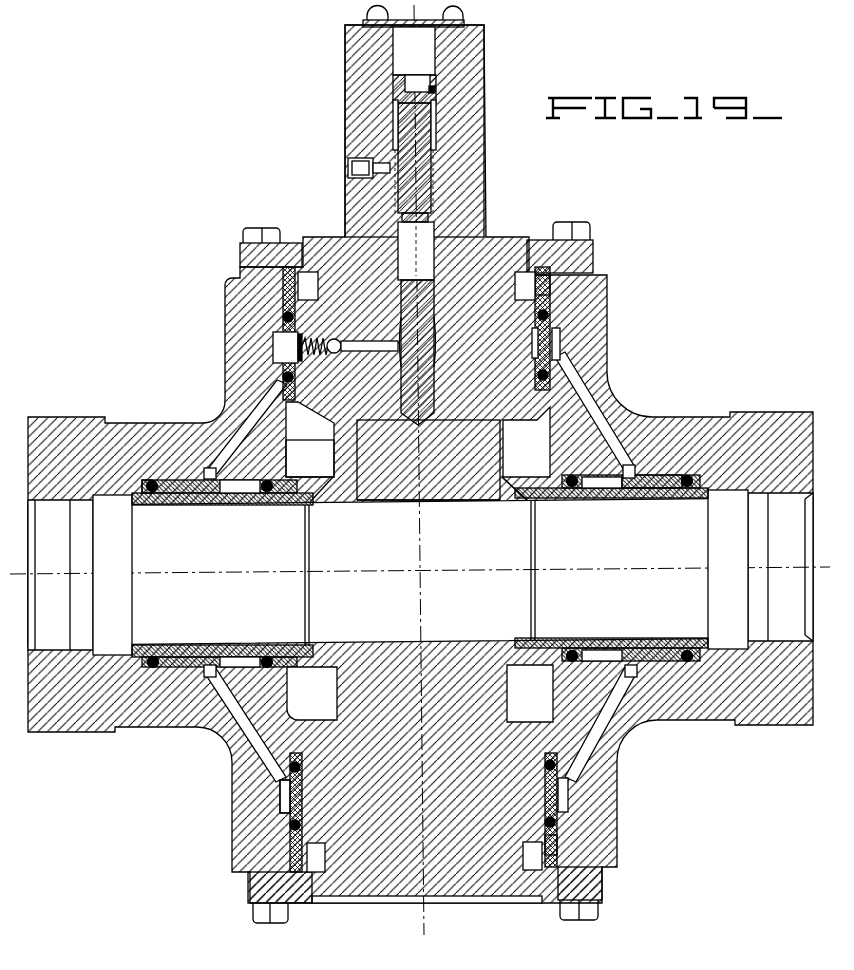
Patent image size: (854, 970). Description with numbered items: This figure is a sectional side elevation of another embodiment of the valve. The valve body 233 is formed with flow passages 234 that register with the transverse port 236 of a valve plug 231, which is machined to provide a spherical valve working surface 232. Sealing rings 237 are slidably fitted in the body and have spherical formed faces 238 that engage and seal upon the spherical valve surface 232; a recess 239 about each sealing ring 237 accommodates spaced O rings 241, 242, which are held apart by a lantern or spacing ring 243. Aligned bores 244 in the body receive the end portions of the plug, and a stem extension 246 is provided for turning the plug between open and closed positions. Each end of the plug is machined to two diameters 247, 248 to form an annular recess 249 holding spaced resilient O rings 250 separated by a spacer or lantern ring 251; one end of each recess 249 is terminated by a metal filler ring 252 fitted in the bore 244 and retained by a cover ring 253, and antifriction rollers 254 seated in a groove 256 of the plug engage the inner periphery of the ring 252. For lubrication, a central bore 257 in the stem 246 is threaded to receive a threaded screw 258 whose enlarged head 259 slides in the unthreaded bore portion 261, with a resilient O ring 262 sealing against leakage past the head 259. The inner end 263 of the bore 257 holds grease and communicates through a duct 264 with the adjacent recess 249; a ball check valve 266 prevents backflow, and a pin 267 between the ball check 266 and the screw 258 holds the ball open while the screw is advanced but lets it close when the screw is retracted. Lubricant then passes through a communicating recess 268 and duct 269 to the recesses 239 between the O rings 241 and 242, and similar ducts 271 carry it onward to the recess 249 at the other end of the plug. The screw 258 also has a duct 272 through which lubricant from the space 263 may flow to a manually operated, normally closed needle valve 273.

The valve plug 231 is at (432, 495).
The spherical valve working surface 232 is at (508, 478).
The valve body 233 is at (653, 412).
The flow passages 234 is at (62, 648).
The transverse port 236 is at (513, 617).
The sealing rings 237 is at (207, 500).
The spherical formed faces 238 is at (312, 493).
The recess 239 is at (250, 490).
The O ring 241 is at (156, 497).
The O ring 242 is at (574, 488).
The lantern or spacing ring 243 is at (628, 490).
The aligned bores 244 is at (547, 478).
The stem extension 246 is at (473, 123).
The first diameter 247 is at (292, 748).
The second diameter 248 is at (541, 402).
The annular recess 249 is at (551, 318).
The resilient O rings 250 is at (557, 312).
The spacer or lantern ring 251 is at (552, 340).
The metal filler ring 252 is at (548, 292).
The cover ring 253 is at (593, 248).
The antifriction rollers 254 is at (525, 272).
The recess or groove 256 is at (519, 272).
The central bore 257 is at (432, 172).
The threaded screw 258 is at (422, 118).
The head 259 is at (433, 78).
The unthreaded bore portion 261 is at (437, 42).
The resilient O ring 262 is at (435, 90).
The inner end of bore 263 is at (412, 408).
The duct 264 is at (380, 353).
The ball check valve 266 is at (332, 353).
The pin 267 is at (380, 343).
The communicating recess 268 is at (562, 333).
The duct 269 is at (232, 424).
The ducts 271 is at (262, 757).
The duct 272 is at (420, 215).
The needle valve 273 is at (353, 170).